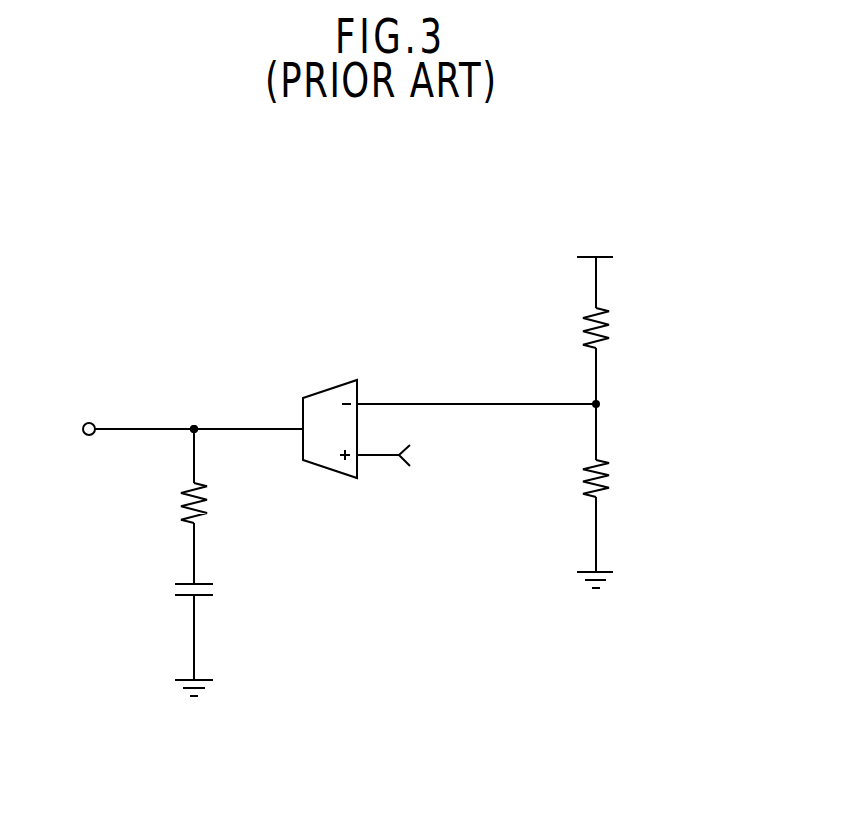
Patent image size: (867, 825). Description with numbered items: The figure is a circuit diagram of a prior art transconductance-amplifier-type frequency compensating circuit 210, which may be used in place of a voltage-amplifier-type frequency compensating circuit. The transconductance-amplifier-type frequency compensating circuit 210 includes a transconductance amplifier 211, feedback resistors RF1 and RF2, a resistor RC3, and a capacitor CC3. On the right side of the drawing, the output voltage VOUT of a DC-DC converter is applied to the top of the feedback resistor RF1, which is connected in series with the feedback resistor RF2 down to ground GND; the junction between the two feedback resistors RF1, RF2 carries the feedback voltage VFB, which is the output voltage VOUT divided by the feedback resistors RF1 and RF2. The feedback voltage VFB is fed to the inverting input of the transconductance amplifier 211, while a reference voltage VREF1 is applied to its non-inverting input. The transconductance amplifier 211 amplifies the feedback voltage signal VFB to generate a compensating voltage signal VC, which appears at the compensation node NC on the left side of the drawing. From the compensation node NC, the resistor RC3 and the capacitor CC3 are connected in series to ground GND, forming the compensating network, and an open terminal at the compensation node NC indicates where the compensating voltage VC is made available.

The transconductance-amplifier-type frequency compensating circuit 210 is at (336, 176).
The transconductance amplifier 211 is at (332, 388).
The compensation node NC is at (193, 427).
The compensating voltage signal VC is at (248, 417).
The resistor RC3 is at (172, 503).
The capacitor CC3 is at (176, 592).
The ground GND is at (394, 650).
The feedback voltage VFB is at (476, 394).
The reference voltage VREF1 is at (414, 457).
The output voltage VOUT is at (595, 244).
The feedback resistor RF1 is at (575, 328).
The feedback resistor RF2 is at (574, 478).